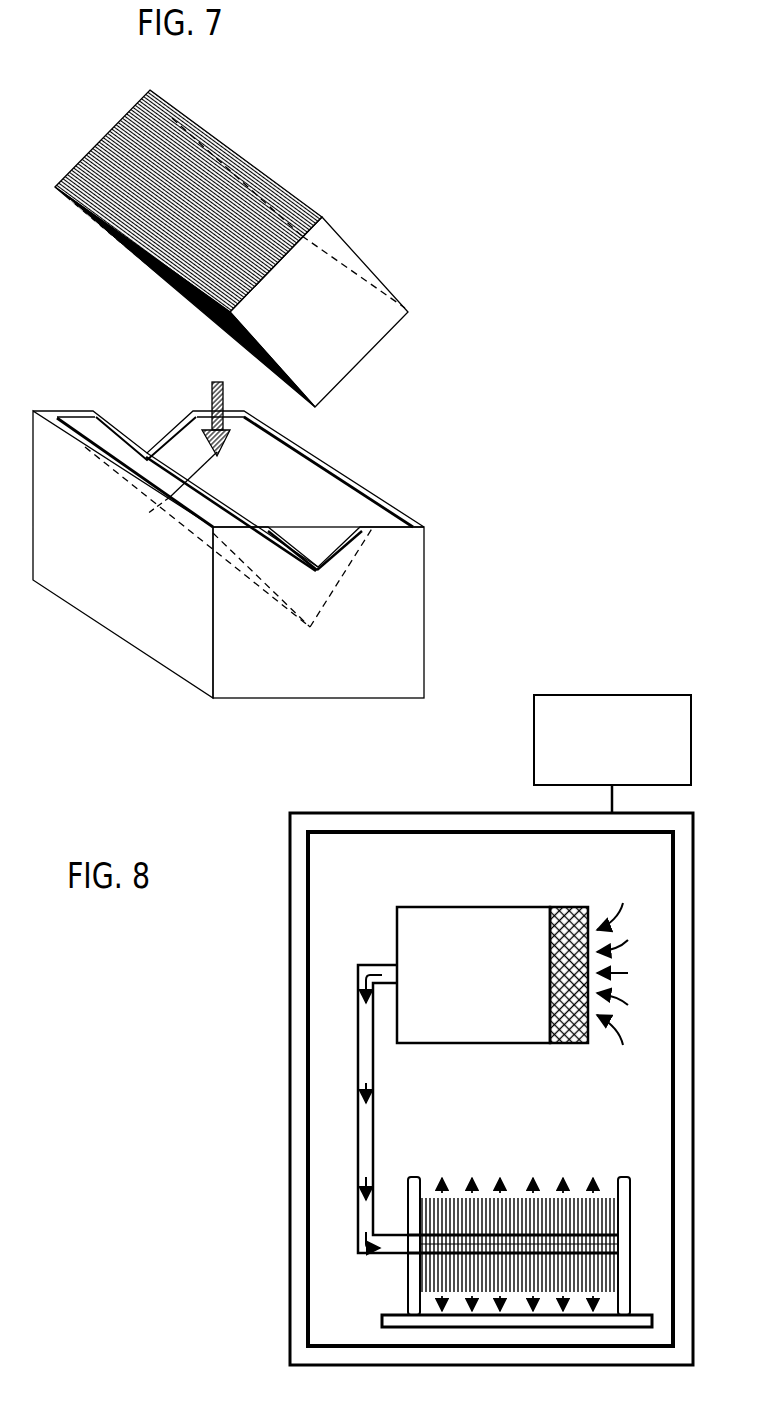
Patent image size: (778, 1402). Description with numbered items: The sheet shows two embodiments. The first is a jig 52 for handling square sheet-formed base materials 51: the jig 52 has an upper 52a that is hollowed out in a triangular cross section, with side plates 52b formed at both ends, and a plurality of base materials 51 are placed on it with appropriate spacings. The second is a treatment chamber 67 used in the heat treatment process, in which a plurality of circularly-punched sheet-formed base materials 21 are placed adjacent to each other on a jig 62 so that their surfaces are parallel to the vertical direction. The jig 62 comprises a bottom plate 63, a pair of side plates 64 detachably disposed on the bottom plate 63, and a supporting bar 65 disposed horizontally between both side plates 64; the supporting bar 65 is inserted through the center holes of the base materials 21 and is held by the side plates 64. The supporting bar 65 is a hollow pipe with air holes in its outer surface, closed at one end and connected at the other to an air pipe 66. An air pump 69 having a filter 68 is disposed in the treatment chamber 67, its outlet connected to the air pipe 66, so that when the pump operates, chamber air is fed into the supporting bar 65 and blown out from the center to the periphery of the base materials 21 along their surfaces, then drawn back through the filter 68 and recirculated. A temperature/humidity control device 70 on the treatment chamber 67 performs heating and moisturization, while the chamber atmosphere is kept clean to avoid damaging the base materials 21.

In FIG. 7, the sheet-formed base material 51 is at (347, 252).
In FIG. 7, the jig 52 is at (437, 587).
In FIG. 7, the upper 52a is at (337, 490).
In FIG. 7, the side plates 52b is at (73, 411).
In FIG. 8, the temperature/humidity control device 70 is at (693, 740).
In FIG. 8, the treatment chamber 67 is at (697, 850).
In FIG. 8, the air pump 69 is at (497, 910).
In FIG. 8, the filter 68 is at (575, 908).
In FIG. 8, the air pipe 66 is at (398, 1248).
In FIG. 8, the jig 62 is at (523, 1213).
In FIG. 8, the side plates 64 is at (413, 1198).
In FIG. 8, the bottom plate 63 is at (635, 1318).
In FIG. 8, the sheet-formed base material 21 is at (477, 1207).
In FIG. 8, the supporting bar 65 is at (533, 1242).